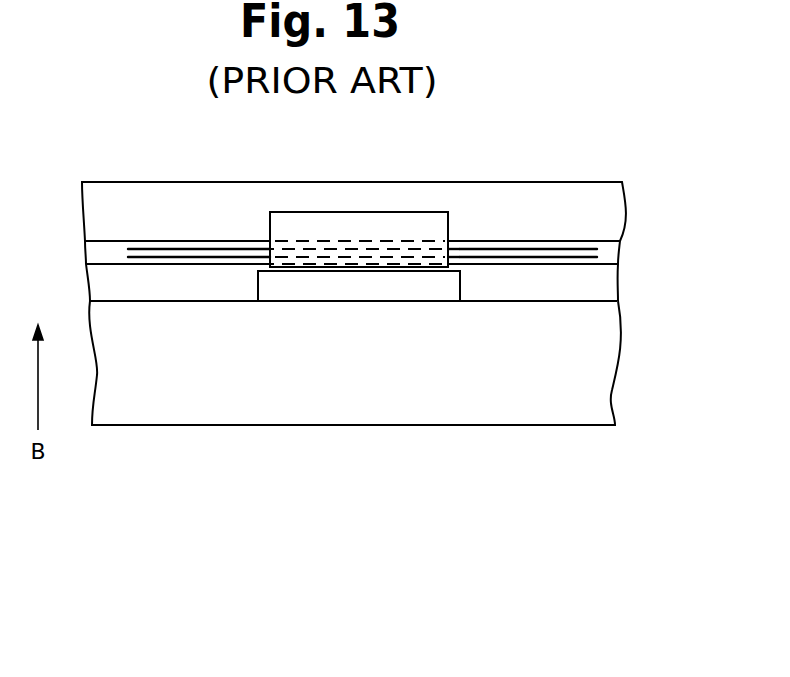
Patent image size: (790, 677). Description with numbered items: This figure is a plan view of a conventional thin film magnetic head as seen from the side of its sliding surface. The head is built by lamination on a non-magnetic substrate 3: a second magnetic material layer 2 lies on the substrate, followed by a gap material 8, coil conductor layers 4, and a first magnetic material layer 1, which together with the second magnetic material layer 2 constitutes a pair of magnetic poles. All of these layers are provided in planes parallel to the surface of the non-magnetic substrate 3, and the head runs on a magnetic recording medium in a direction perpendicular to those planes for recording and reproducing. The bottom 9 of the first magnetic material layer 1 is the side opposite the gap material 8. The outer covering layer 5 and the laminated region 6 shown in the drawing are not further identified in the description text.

The first magnetic material layer 1 is at (418, 224).
The second magnetic material layer 2 is at (415, 288).
The non-magnetic substrate 3 is at (577, 412).
The coil conductor layers 4 is at (597, 247).
The cover layer 5 is at (165, 194).
The left laminated layers (electrode lines) 6 is at (97, 253).
The gap material 8 is at (455, 248).
The bottom of the first magnetic material layer 9 is at (602, 288).